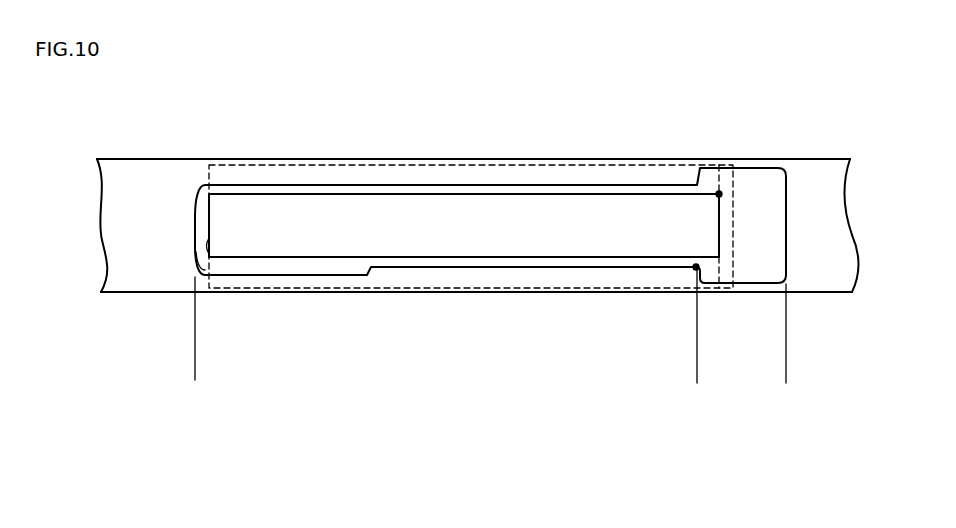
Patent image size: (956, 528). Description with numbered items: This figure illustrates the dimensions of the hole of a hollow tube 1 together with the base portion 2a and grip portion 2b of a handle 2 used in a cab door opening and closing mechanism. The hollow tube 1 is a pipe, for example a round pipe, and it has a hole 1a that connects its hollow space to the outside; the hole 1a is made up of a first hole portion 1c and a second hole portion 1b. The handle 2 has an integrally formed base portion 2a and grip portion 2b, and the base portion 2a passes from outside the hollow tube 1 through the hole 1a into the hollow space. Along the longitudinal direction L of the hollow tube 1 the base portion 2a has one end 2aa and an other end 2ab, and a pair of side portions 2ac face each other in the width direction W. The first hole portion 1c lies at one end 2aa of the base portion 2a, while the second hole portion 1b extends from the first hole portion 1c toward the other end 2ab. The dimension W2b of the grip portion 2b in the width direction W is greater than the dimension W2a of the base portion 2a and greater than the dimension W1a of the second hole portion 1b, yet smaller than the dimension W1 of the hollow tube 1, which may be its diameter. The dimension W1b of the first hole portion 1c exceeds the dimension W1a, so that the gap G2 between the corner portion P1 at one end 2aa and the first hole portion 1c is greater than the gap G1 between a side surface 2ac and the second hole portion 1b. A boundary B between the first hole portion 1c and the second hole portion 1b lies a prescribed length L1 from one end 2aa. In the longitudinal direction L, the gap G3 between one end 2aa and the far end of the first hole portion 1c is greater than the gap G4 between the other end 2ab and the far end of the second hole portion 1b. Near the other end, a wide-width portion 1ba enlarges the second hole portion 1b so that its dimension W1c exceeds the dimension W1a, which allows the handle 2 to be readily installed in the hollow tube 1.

The hollow tube 1 is at (366, 158).
The hole 1a is at (785, 414).
The second hole portion 1b is at (697, 364).
The first hole portion 1c is at (785, 364).
The wide-width portion 1ba is at (287, 277).
The handle 2 is at (302, 124).
The base portion 2a is at (250, 213).
The grip portion 2b is at (283, 163).
The one end 2aa is at (720, 238).
The other end 2ab is at (203, 277).
The side portions 2ac is at (412, 193).
The dimension of gap G1 is at (458, 150).
The dimension of gap G2 is at (713, 194).
The dimension of gap G3 is at (786, 226).
The dimension of gap G4 is at (209, 225).
The dimension of hollow tube W1 is at (153, 292).
The dimension of second hole portion W1a is at (580, 185).
The dimension of first hole portion W1b is at (718, 165).
The dimension of second hole portion W1c is at (318, 194).
The dimension of base portion W2a is at (640, 194).
The dimension of grip portion W2b is at (520, 165).
The prescribed length L1 is at (719, 267).
The corner portion P1 is at (722, 194).
The boundary B is at (695, 268).
The width direction W is at (149, 342).
The longitudinal direction L is at (208, 399).